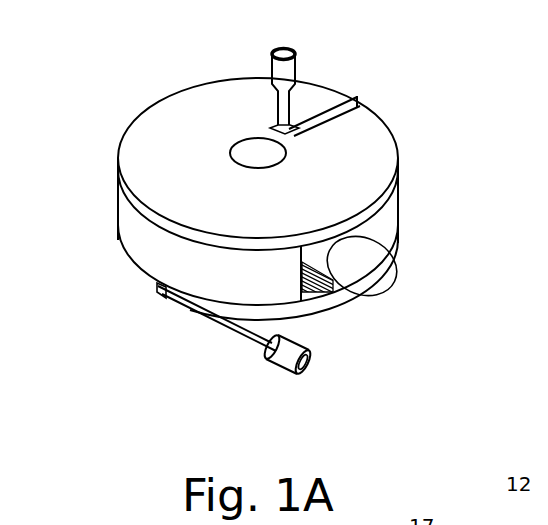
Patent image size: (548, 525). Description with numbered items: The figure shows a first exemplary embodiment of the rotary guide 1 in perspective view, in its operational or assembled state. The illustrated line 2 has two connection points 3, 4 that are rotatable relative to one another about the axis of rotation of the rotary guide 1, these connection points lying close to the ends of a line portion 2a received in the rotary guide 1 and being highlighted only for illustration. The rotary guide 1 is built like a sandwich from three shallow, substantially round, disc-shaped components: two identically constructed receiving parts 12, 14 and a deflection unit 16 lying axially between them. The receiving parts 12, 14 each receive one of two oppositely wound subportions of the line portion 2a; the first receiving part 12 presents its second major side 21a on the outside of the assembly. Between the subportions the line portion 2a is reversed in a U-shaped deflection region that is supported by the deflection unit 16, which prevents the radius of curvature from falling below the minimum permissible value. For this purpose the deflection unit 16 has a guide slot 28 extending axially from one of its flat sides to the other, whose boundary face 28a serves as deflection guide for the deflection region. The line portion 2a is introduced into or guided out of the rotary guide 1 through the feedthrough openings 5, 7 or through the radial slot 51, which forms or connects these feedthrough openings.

The rotary guide 1 is at (113, 90).
The second major side 21a is at (212, 92).
The connection point 3 is at (312, 48).
The feedthrough opening 7 is at (300, 122).
The radial slot 51 is at (378, 98).
The receiving part 12 is at (340, 151).
The deflection unit 16 is at (384, 209).
The boundary face 28a is at (352, 285).
The receiving part 14 is at (357, 292).
The guide slot 28 is at (326, 302).
The feedthrough opening 5 is at (162, 297).
The line portion 2a is at (233, 323).
The line 2 is at (243, 360).
The connection point 4 is at (286, 384).